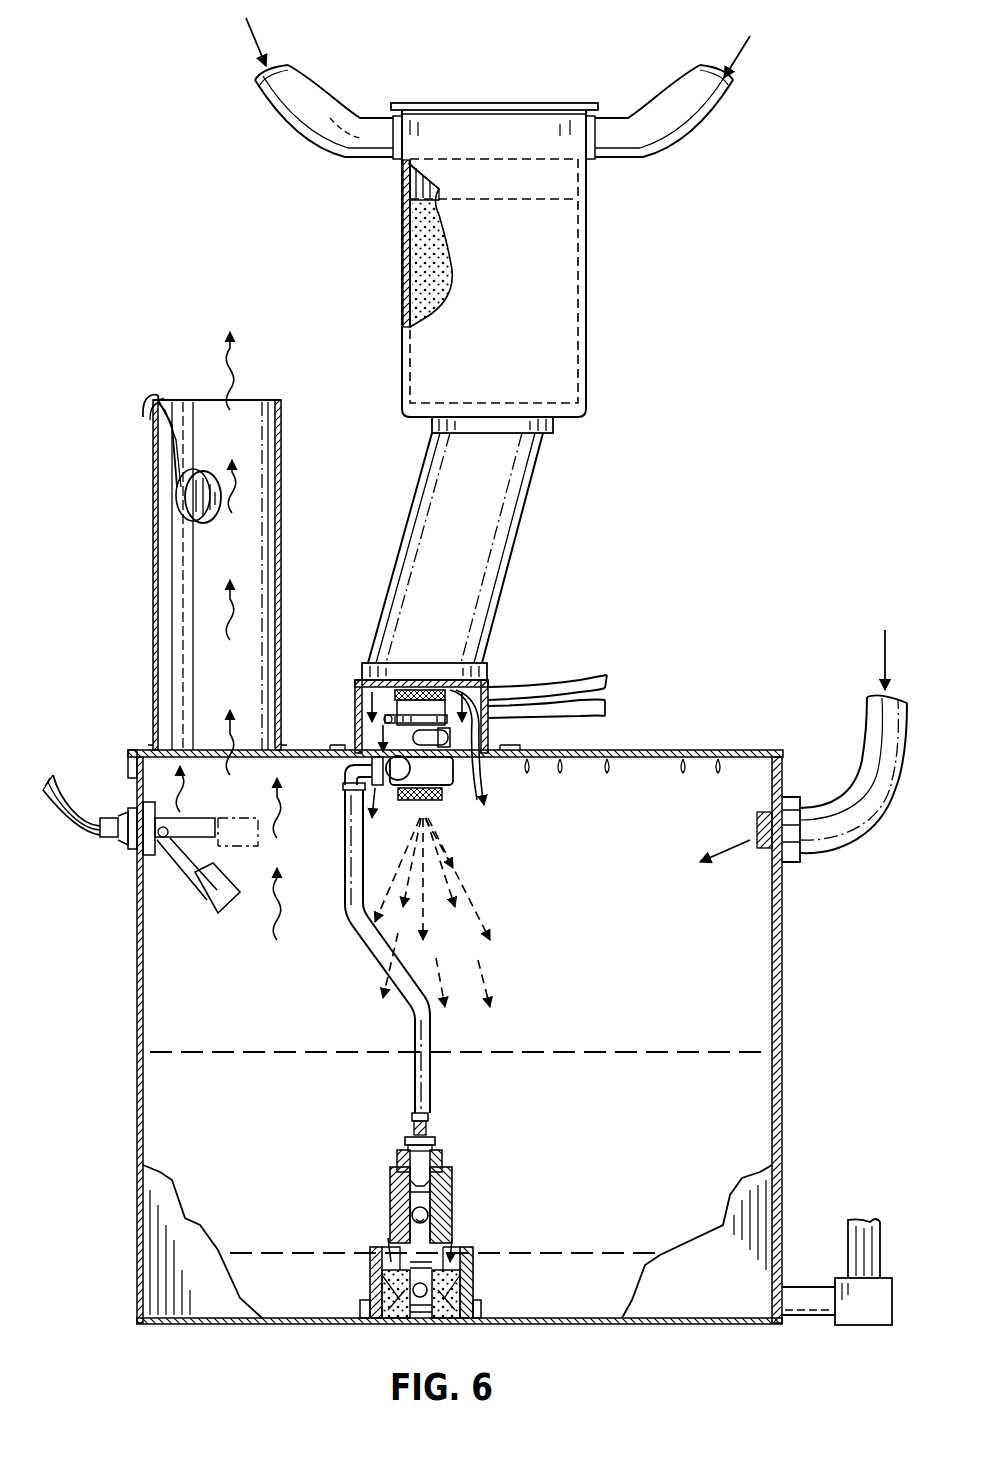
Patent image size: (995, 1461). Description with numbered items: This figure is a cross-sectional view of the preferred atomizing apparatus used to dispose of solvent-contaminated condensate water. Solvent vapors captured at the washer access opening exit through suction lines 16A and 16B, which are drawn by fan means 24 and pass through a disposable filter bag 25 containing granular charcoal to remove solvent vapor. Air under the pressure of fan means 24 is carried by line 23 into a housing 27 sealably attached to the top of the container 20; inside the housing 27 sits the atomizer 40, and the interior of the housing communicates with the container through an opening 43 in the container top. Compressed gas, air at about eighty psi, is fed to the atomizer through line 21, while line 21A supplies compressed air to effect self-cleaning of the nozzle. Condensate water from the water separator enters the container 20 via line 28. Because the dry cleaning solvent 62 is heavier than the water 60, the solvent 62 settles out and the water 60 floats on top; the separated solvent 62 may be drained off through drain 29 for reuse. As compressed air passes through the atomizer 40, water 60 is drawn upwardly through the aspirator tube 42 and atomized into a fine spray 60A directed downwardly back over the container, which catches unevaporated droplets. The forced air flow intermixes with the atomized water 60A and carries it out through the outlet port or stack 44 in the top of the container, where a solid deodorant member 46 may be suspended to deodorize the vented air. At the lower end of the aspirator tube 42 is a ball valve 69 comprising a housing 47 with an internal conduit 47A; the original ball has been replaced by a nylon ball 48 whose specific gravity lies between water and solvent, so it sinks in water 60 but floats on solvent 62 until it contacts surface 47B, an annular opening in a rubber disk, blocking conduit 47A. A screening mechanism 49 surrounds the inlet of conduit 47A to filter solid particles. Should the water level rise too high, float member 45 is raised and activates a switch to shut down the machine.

The suction line 16A is at (297, 128).
The suction line 16B is at (674, 128).
The fan means 24 is at (586, 185).
The filter bag 25 is at (406, 237).
The line 23 is at (513, 520).
The outlet port or stack 44 is at (280, 523).
The solid deodorant member 46 is at (205, 525).
The housing 27 is at (360, 690).
The atomizer 40 is at (407, 688).
The opening 43 is at (365, 742).
The line 21A is at (547, 682).
The line 21 is at (600, 702).
The container 20 is at (687, 750).
The line 28 is at (855, 768).
The float member 45 is at (233, 903).
The atomized liquid 60A is at (488, 941).
The aspirator tube 42 is at (412, 1040).
The water 60 is at (680, 1052).
The surface 47B is at (392, 1182).
The internal conduit 47A is at (435, 1190).
The housing 47 is at (452, 1215).
The nylon ball 48 is at (412, 1227).
The ball valve 69 is at (378, 1197).
The screening mechanism 49 is at (490, 1288).
The dry cleaning solvent 62 is at (614, 1252).
The drain 29 is at (863, 1320).